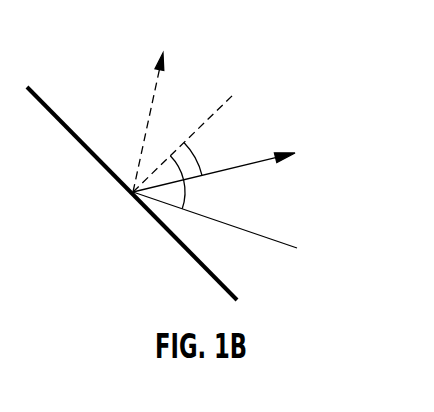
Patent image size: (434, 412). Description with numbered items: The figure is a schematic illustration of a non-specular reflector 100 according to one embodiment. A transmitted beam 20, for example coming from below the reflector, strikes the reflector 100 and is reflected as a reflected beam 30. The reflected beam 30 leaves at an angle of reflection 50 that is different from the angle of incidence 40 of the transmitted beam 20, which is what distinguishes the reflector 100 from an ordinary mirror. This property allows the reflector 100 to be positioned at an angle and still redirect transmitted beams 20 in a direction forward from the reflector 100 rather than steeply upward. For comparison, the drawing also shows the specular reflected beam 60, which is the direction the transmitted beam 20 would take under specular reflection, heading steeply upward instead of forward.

The non-specular reflector 100 is at (58, 118).
The specular reflected beam 60 is at (152, 92).
The angle of reflection 50 is at (197, 152).
The reflected beam 30 is at (263, 165).
The angle of incidence 40 is at (190, 195).
The transmitted beam 20 is at (267, 240).